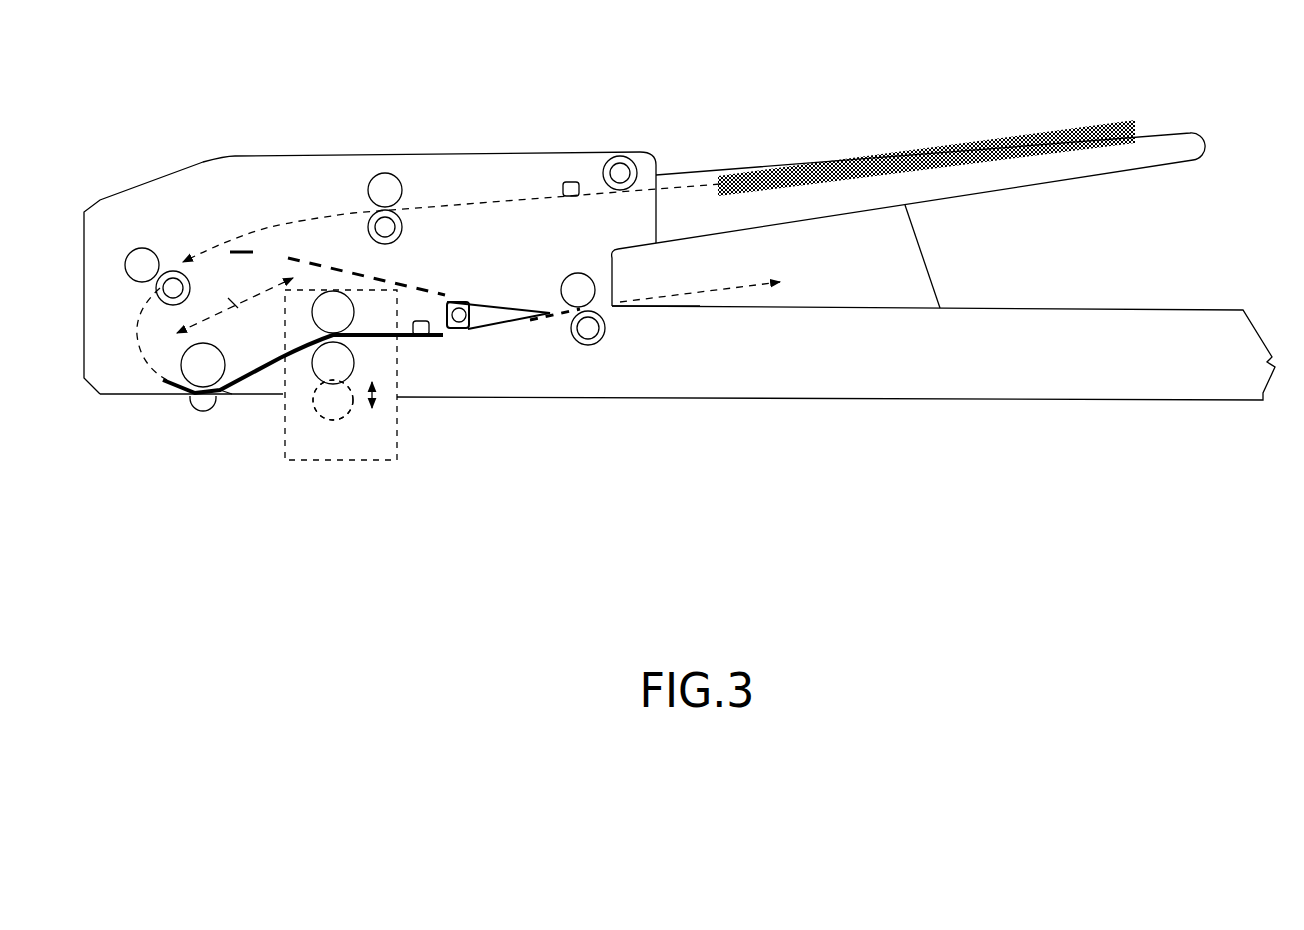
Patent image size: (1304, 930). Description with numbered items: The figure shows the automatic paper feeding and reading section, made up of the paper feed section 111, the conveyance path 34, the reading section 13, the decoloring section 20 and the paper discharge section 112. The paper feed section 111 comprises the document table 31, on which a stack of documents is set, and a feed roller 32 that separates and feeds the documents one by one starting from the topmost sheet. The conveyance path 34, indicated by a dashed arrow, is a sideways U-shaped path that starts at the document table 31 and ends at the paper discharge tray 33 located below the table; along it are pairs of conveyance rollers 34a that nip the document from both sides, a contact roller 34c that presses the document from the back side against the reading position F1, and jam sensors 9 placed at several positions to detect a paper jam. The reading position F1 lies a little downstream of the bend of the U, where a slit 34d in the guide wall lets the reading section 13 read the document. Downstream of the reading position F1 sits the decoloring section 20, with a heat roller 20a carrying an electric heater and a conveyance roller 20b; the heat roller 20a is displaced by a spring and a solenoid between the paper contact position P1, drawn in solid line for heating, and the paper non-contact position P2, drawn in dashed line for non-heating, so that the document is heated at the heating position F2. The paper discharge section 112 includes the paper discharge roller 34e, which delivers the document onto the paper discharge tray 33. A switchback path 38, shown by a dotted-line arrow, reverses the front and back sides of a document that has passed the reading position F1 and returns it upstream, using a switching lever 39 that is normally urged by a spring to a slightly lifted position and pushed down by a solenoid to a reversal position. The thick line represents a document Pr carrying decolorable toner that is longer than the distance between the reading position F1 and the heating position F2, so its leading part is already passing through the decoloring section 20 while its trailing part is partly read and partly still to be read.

The paper feed section 111 is at (668, 142).
The document table 31 is at (708, 168).
The paper discharge tray 33 is at (703, 305).
The paper discharge section 112 is at (660, 330).
The feed roller 32 is at (620, 156).
The conveyance path 34 is at (497, 200).
The conveyance rollers 34a is at (143, 247).
The jam sensor 9 is at (570, 182).
The switchback path 38 is at (255, 250).
The conveyance roller 20b is at (337, 292).
The decoloring section 20 is at (397, 448).
The heat roller 20a is at (333, 413).
The paper contact position P1 is at (375, 380).
The paper non-contact position P2 is at (348, 412).
The reading position F1 is at (235, 312).
The heating position F2 is at (366, 268).
The document Pr is at (387, 320).
The slit 34d is at (185, 398).
The reading section 13 is at (203, 412).
The contact roller 34c is at (233, 395).
The switching lever 39 is at (480, 332).
The paper discharge roller 34e is at (590, 347).